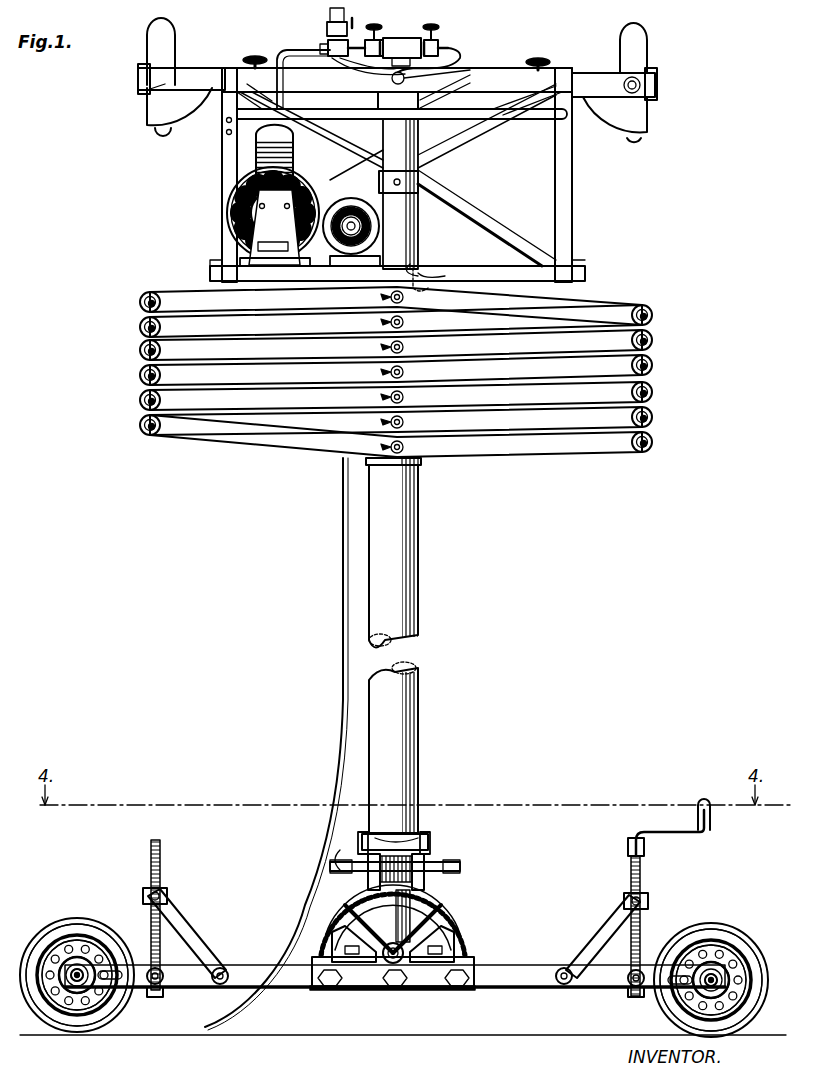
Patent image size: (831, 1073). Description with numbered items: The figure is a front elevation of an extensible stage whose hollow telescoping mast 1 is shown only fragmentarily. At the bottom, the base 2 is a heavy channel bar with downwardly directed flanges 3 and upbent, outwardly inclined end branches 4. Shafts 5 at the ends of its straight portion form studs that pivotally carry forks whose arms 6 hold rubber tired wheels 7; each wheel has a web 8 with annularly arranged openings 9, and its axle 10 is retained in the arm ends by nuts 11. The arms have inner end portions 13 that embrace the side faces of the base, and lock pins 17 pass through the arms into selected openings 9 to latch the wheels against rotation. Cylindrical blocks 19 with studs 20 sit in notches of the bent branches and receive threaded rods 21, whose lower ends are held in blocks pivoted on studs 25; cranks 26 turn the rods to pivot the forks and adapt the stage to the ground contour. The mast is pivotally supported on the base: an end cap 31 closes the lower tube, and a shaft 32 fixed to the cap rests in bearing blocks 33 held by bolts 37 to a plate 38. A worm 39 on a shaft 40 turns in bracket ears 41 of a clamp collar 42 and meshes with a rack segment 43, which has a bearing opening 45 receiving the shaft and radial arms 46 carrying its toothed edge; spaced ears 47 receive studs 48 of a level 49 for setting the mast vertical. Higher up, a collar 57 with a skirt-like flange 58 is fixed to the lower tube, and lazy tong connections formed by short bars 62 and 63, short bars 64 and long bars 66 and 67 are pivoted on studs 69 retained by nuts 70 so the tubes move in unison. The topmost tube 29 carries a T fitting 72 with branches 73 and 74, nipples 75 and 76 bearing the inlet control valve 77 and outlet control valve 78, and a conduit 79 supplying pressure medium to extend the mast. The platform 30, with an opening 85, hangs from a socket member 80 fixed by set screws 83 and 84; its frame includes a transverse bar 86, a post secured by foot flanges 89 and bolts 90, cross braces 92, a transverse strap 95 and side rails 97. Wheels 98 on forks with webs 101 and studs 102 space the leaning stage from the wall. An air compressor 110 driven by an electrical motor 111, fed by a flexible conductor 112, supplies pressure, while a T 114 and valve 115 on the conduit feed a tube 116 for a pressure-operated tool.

The extensible platform-supporting mast 1 is at (410, 700).
The base 2 is at (258, 964).
The flanges 3 is at (282, 988).
The end branches 4 is at (196, 948).
The shafts 5 is at (214, 986).
The arms 6 is at (175, 982).
The rubber tired wheels 7 is at (115, 1008).
The webs 8 is at (52, 938).
The openings 9 is at (104, 935).
The axles 10 is at (66, 978).
The nuts 11 is at (72, 985).
The inner end portions 13 is at (215, 1024).
The lock pins 17 is at (108, 968).
The cylindrical blocks 19 is at (165, 896).
The studs 20 is at (144, 892).
The threaded rods 21 is at (160, 872).
The studs 25 is at (156, 997).
The cranks 26 is at (706, 832).
The topmost tube 29 is at (416, 268).
The platform 30 is at (560, 262).
The end cap 31 is at (420, 930).
The shaft 32 is at (390, 962).
The bearing blocks 33 is at (440, 960).
The bolts 37 is at (350, 958).
The plate 38 is at (424, 966).
The worm 39 is at (430, 840).
The shaft 40 is at (425, 862).
The bracket ears 41 is at (372, 880).
The clamp collar 42 is at (345, 845).
The rack segment 43 is at (432, 935).
The bearing opening 45 is at (404, 975).
The radial arms 46 is at (450, 925).
The ears 47 is at (428, 832).
The studs 48 is at (360, 834).
The level 49 is at (380, 836).
The collar 57 is at (380, 462).
The skirt-like flange 58 is at (418, 460).
The short bar 62 is at (195, 298).
The short bar 63 is at (590, 303).
The short bar 64 is at (553, 448).
The long bar 66 is at (620, 418).
The long bar 67 is at (168, 398).
The studs 69 is at (404, 422).
The nuts 70 is at (382, 422).
The T fitting 72 is at (398, 38).
The branch 73 is at (358, 61).
The branch 74 is at (455, 56).
The nipple 75 is at (382, 36).
The nipple 76 is at (430, 38).
The inlet control valve 77 is at (330, 42).
The outlet control valve 78 is at (440, 42).
The conduit 79 is at (292, 48).
The socket member 80 is at (395, 137).
The set screw 83 is at (480, 58).
The set screw 84 is at (420, 180).
The opening 85 is at (391, 297).
The transverse bar 86 is at (492, 92).
The foot flanges 89 is at (440, 276).
The bolts 90 is at (446, 270).
The cross braces 92 is at (488, 226).
The transverse strap 95 is at (478, 80).
The side rails 97 is at (572, 185).
The wheels 98 is at (632, 66).
The arm-connecting webs 101 is at (138, 78).
The studs 102 is at (645, 88).
The air compressor 110 is at (256, 150).
The electrical motor 111 is at (346, 198).
The flexible conductor 112 is at (345, 280).
The T 114 is at (339, 58).
The valve 115 is at (328, 14).
The tube 116 is at (328, 50).